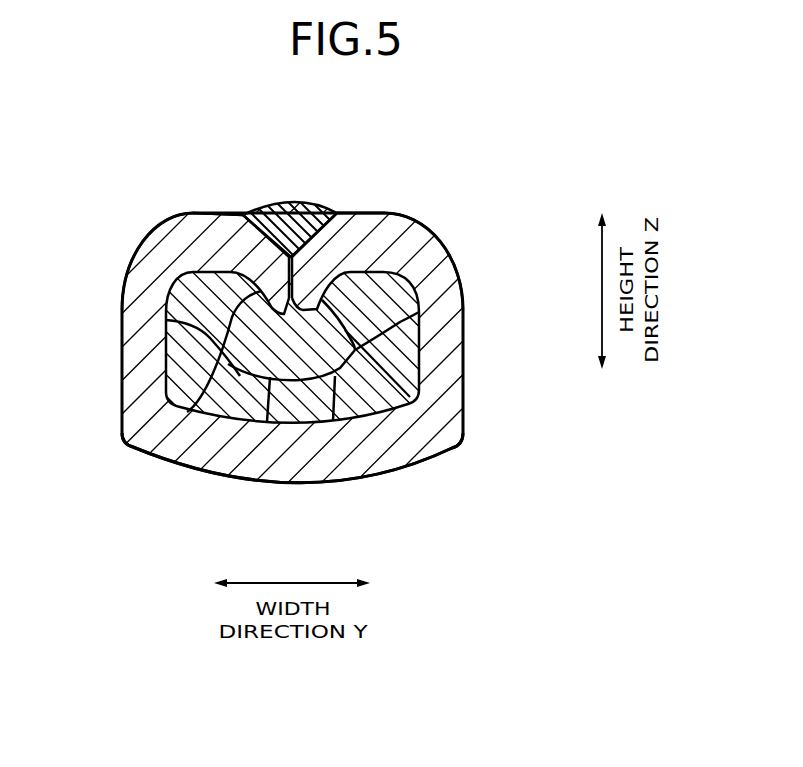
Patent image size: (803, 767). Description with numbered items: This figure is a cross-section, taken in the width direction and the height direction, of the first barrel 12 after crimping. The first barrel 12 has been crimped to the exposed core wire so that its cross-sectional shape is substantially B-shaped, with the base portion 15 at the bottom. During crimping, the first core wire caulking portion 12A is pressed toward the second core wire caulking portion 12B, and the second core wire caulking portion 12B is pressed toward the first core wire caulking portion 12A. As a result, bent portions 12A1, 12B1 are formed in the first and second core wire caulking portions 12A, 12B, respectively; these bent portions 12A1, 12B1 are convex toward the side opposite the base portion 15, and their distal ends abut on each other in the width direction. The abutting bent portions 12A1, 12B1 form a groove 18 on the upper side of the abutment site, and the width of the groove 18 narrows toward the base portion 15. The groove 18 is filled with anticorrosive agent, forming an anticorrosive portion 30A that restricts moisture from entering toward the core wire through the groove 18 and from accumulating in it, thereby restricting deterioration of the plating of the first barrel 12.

The first barrel 12 is at (134, 208).
The first core wire caulking portion 12A is at (448, 337).
The second core wire caulking portion 12B is at (124, 370).
The bent portion 12A1 is at (365, 226).
The bent portion 12B1 is at (229, 234).
The groove 18 is at (302, 196).
The anticorrosive portion 30A is at (325, 211).
The base portion 15 is at (330, 485).